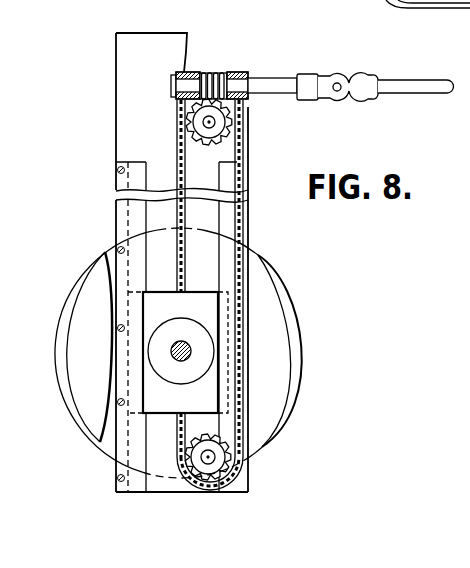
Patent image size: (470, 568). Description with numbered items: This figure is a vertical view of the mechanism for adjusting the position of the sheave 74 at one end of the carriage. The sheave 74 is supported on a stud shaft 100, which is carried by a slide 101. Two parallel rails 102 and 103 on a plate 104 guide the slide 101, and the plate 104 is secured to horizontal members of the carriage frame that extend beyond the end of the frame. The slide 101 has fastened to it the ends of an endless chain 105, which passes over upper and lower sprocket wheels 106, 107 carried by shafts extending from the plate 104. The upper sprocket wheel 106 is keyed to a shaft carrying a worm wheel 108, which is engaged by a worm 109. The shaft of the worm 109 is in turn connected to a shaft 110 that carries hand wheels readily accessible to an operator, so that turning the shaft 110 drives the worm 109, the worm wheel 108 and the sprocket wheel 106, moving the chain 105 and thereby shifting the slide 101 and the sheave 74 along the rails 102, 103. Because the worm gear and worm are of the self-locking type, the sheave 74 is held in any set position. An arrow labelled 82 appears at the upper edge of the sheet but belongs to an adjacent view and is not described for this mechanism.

The sheave 74 is at (307, 340).
The direction arrow 82 is at (468, 14).
The stud shaft 100 is at (186, 343).
The slide 101 is at (162, 400).
The rail 102 is at (117, 233).
The rail 103 is at (224, 252).
The plate 104 is at (118, 138).
The endless chain 105 is at (245, 222).
The sprocket wheel 106 is at (232, 142).
The sprocket wheel 107 is at (228, 445).
The worm wheel 108 is at (228, 102).
The worm 109 is at (226, 72).
The shaft 110 is at (401, 86).